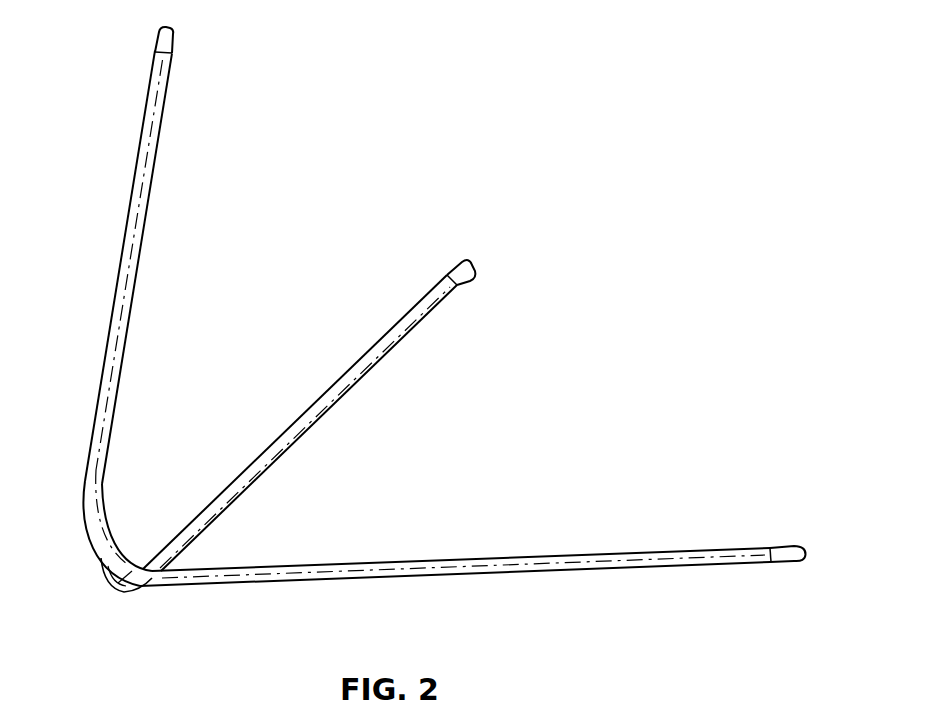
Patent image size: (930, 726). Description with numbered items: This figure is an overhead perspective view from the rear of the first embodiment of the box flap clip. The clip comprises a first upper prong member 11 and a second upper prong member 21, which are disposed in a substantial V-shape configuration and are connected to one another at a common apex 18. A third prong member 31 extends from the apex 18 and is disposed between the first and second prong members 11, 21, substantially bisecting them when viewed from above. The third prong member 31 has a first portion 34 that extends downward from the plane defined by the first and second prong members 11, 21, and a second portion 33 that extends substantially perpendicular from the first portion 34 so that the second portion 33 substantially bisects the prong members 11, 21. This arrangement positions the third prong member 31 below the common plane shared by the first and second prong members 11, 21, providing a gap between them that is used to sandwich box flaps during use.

The first upper prong member 11 is at (572, 550).
The apex 18 is at (93, 543).
The second upper prong member 21 is at (105, 268).
The third prong member 31 is at (309, 415).
The second portion 33 is at (355, 380).
The first portion 34 is at (118, 590).